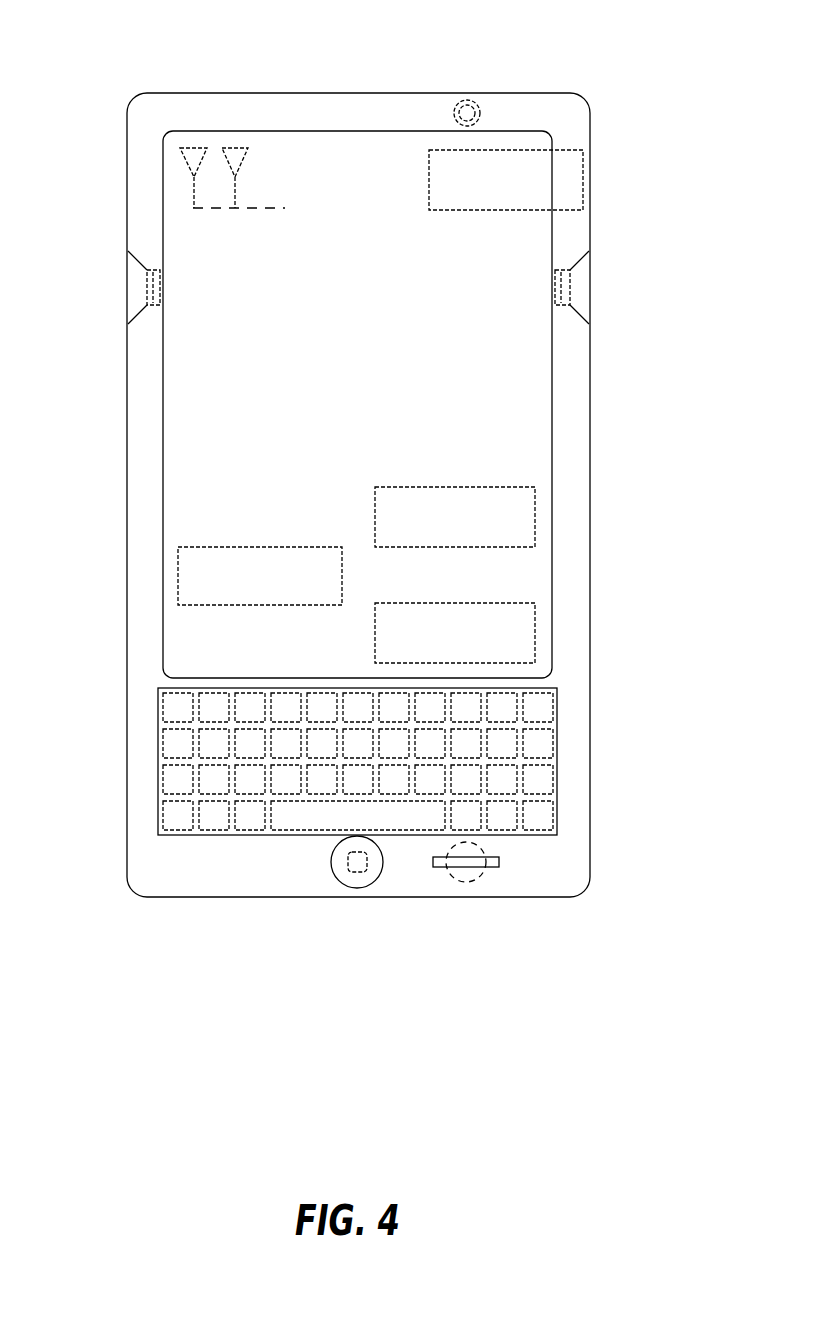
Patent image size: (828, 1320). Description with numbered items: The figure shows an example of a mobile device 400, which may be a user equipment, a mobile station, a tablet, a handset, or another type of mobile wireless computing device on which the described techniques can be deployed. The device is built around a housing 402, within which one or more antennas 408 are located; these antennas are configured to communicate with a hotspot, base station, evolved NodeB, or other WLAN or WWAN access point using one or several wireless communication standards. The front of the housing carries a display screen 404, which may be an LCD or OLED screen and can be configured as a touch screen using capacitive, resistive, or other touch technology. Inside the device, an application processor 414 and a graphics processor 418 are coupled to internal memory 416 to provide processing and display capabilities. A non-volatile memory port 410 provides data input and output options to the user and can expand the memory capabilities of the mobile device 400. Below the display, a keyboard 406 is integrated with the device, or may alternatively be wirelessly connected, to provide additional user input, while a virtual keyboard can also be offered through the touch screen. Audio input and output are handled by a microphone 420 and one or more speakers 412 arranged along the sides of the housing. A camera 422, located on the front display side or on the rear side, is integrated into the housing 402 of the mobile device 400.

The mobile device 400 is at (578, 31).
The housing 402 is at (357, 93).
The display screen 404 is at (530, 395).
The keyboard 406 is at (560, 760).
The antennas 408 is at (237, 148).
The non-volatile memory port 410 is at (592, 178).
The speakers 412 is at (136, 289).
The application processor 414 is at (456, 487).
The internal memory 416 is at (458, 603).
The graphics processor 418 is at (262, 547).
The microphone 420 is at (470, 882).
The camera 422 is at (478, 101).